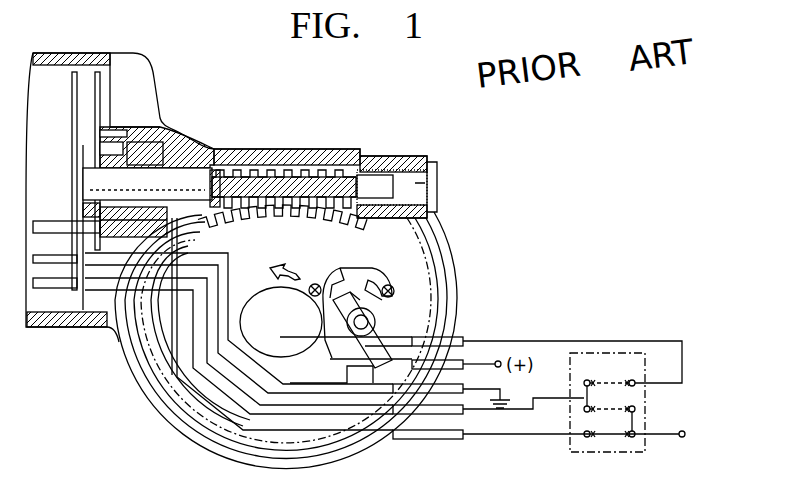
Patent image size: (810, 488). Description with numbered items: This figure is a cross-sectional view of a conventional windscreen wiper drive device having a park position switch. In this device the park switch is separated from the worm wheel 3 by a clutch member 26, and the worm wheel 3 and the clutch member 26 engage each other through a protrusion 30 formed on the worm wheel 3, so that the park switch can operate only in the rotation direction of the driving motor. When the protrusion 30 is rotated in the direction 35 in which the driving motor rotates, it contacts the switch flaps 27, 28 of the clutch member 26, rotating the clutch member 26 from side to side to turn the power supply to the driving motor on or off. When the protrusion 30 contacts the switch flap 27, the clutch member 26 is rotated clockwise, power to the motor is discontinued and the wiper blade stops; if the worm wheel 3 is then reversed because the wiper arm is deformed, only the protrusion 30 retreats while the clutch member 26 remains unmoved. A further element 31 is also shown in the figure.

The worm wheel 3 is at (329, 218).
The clutch member 26 is at (376, 345).
The switch flap 27 is at (332, 330).
The switch flap 28 is at (393, 298).
The protrusion 30 is at (311, 294).
The screw 31 is at (394, 287).
The direction 35 is at (360, 233).